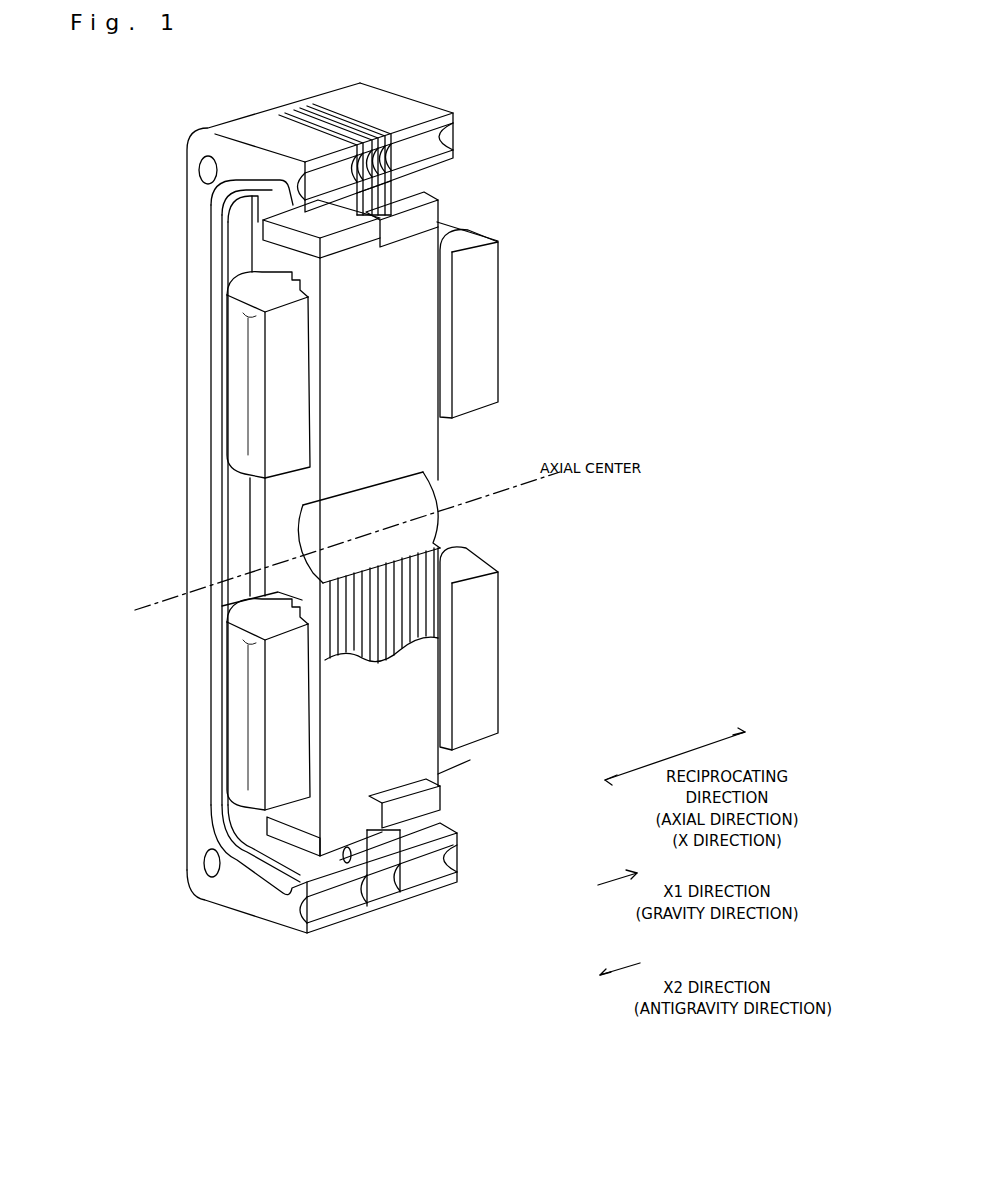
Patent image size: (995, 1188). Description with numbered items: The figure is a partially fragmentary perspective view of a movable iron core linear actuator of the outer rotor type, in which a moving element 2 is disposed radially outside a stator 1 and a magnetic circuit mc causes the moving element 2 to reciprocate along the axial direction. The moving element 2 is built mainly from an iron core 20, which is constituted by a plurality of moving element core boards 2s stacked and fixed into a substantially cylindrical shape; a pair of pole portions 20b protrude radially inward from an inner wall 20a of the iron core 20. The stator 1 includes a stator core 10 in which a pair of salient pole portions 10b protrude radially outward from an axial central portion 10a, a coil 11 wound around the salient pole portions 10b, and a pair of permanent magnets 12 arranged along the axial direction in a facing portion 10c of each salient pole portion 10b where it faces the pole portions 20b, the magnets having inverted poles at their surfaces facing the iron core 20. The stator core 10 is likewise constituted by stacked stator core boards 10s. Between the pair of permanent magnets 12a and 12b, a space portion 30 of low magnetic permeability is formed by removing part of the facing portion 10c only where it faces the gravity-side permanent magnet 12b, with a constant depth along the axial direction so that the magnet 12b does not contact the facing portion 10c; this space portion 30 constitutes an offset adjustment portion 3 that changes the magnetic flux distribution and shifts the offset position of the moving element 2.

The stator 1 is at (513, 580).
The moving element 2 is at (384, 484).
The moving element core boards 2s is at (315, 74).
The offset adjustment portion 3 is at (583, 243).
The magnetic circuit mc is at (615, 345).
The stator core 10 is at (351, 526).
The axial central portion 10a is at (275, 525).
The salient pole portions 10b is at (420, 300).
The facing portion 10c is at (290, 255).
The stator core boards 10s is at (370, 648).
The coil 11 is at (272, 373).
The permanent magnets 12 is at (303, 847).
The permanent magnet 12a is at (290, 218).
The permanent magnet 12b is at (428, 212).
The iron core 20 is at (347, 118).
The inner wall 20a is at (351, 858).
The pole portions 20b is at (393, 203).
The space portion 30 is at (455, 240).